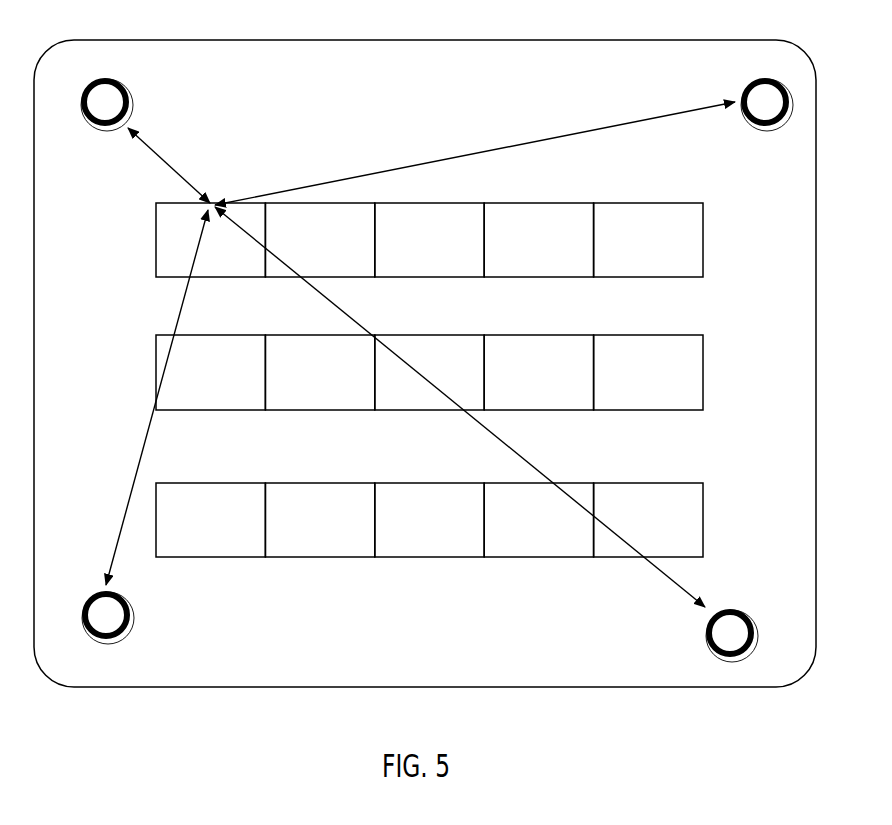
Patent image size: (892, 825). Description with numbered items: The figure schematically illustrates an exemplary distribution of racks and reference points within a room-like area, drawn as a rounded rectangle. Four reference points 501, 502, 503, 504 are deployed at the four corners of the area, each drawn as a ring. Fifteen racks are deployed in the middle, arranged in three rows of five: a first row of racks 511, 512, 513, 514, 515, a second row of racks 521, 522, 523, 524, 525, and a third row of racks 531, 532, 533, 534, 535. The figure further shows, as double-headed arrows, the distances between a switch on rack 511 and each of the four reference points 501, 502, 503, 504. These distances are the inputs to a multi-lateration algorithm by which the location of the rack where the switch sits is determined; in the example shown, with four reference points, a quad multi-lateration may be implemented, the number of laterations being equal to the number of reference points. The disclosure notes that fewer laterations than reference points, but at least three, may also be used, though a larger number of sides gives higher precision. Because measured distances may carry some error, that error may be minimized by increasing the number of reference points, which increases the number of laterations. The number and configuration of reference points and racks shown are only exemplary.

The reference point 501 is at (128, 94).
The reference point 502 is at (750, 94).
The reference point 503 is at (136, 618).
The reference point 504 is at (707, 636).
The rack 511 is at (210, 240).
The rack 512 is at (319, 240).
The rack 513 is at (429, 240).
The rack 514 is at (538, 240).
The rack 515 is at (648, 240).
The rack 521 is at (210, 372).
The rack 522 is at (319, 372).
The rack 523 is at (429, 372).
The rack 524 is at (538, 372).
The rack 525 is at (648, 372).
The rack 531 is at (210, 520).
The rack 532 is at (319, 520).
The rack 533 is at (429, 520).
The rack 534 is at (538, 520).
The rack 535 is at (648, 520).